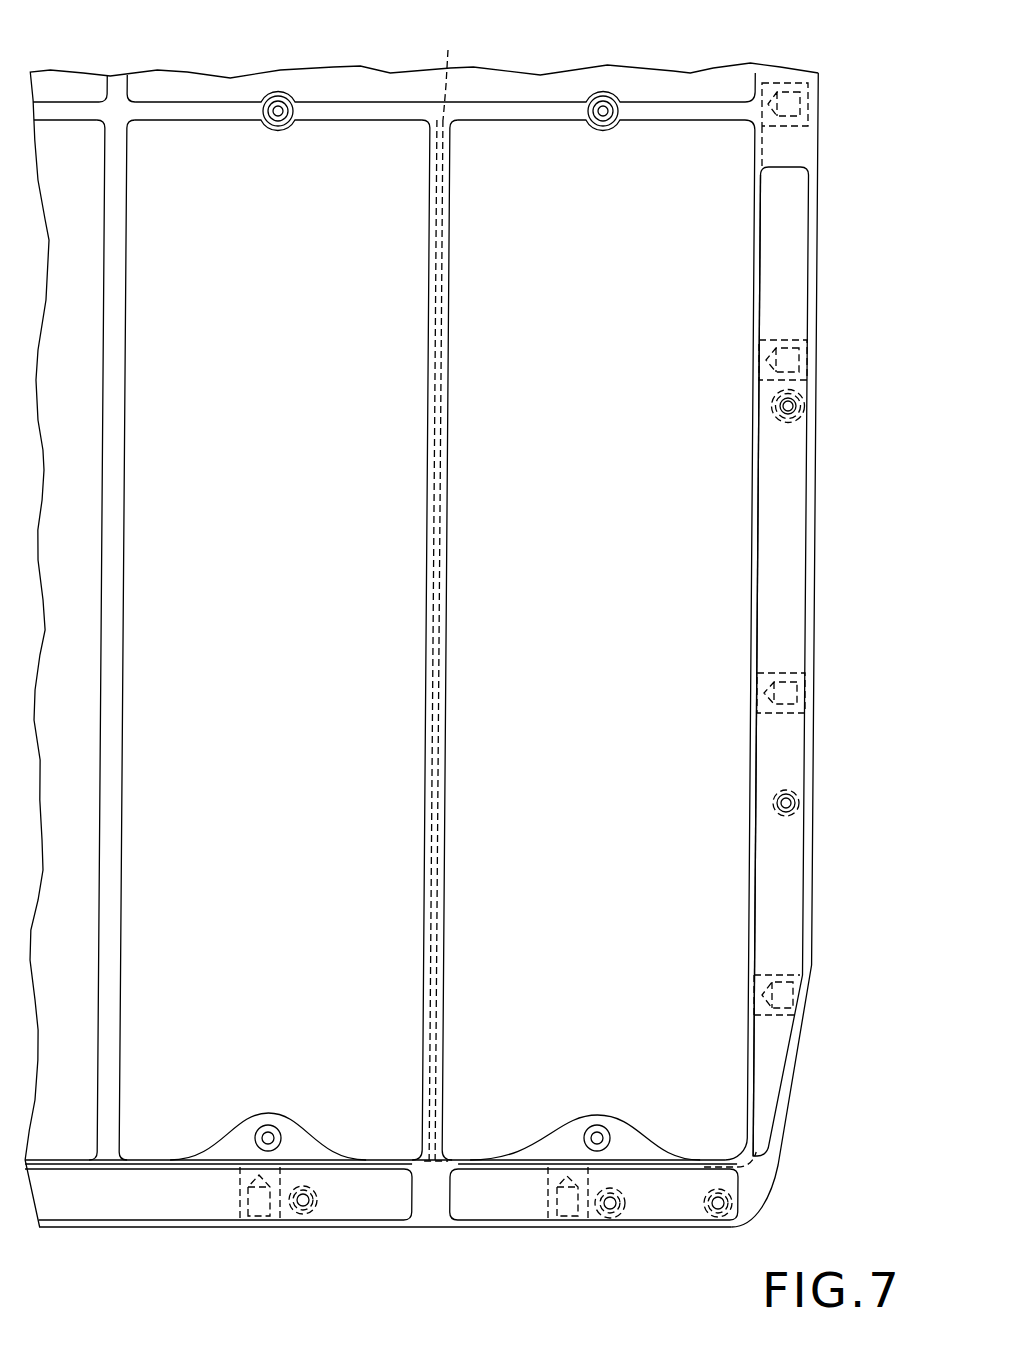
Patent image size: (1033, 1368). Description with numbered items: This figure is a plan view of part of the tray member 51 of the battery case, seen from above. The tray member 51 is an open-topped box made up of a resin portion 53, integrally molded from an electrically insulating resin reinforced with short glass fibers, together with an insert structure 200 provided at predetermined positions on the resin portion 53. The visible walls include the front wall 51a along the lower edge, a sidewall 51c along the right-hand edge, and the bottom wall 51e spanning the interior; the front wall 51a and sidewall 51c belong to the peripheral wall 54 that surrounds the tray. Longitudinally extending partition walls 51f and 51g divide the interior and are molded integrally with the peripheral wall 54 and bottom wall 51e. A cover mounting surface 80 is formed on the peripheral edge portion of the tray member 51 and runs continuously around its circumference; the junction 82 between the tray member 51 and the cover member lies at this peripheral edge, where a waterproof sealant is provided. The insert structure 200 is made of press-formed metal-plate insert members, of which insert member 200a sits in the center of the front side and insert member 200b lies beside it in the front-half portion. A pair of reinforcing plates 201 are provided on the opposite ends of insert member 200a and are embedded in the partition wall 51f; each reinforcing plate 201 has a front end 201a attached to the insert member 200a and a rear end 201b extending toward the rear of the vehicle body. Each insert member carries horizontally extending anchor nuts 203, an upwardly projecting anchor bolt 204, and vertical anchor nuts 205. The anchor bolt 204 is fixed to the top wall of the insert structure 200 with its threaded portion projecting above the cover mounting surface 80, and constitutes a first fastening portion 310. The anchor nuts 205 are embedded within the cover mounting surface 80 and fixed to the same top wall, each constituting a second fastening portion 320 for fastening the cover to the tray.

The tray member 51 is at (556, 70).
The front wall 51a is at (180, 1205).
The sidewall 51c is at (785, 600).
The bottom wall 51e is at (375, 848).
The partition wall 51f is at (448, 713).
The partition wall 51g is at (118, 731).
The resin portion 53 is at (437, 851).
The peripheral wall 54 is at (793, 1125).
The cover mounting surface 80 is at (788, 541).
The junction 82 is at (788, 486).
The insert structure 200 is at (427, 1233).
The insert member 200a is at (100, 1208).
The insert member 200b is at (792, 919).
The reinforcing plate 201 is at (447, 615).
The front end 201a is at (452, 1162).
The rear end 201b is at (447, 71).
The anchor nut 203 is at (812, 118).
The anchor bolt 204 is at (797, 803).
The anchor nut 205 is at (797, 405).
The first fastening portion 310 is at (778, 818).
The second fastening portion 320 is at (782, 420).